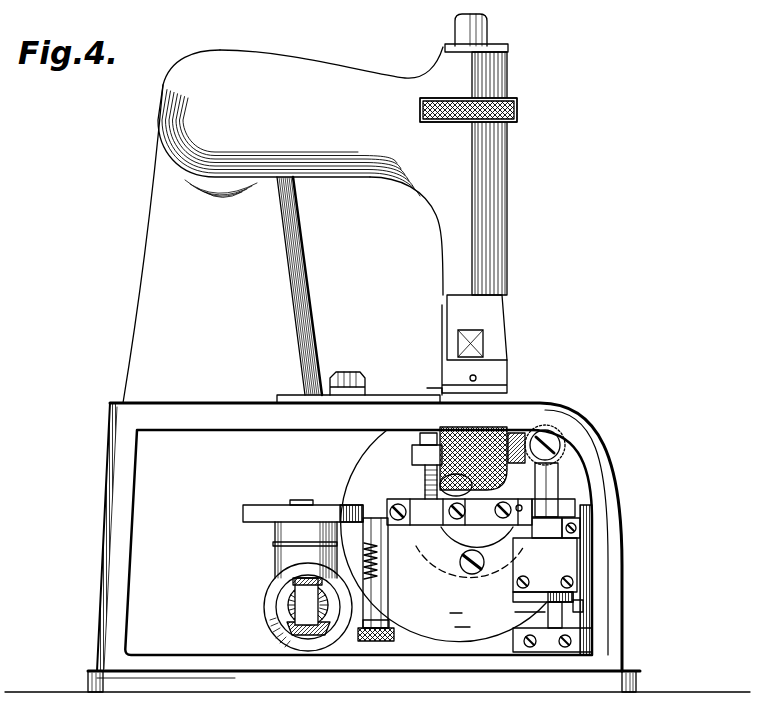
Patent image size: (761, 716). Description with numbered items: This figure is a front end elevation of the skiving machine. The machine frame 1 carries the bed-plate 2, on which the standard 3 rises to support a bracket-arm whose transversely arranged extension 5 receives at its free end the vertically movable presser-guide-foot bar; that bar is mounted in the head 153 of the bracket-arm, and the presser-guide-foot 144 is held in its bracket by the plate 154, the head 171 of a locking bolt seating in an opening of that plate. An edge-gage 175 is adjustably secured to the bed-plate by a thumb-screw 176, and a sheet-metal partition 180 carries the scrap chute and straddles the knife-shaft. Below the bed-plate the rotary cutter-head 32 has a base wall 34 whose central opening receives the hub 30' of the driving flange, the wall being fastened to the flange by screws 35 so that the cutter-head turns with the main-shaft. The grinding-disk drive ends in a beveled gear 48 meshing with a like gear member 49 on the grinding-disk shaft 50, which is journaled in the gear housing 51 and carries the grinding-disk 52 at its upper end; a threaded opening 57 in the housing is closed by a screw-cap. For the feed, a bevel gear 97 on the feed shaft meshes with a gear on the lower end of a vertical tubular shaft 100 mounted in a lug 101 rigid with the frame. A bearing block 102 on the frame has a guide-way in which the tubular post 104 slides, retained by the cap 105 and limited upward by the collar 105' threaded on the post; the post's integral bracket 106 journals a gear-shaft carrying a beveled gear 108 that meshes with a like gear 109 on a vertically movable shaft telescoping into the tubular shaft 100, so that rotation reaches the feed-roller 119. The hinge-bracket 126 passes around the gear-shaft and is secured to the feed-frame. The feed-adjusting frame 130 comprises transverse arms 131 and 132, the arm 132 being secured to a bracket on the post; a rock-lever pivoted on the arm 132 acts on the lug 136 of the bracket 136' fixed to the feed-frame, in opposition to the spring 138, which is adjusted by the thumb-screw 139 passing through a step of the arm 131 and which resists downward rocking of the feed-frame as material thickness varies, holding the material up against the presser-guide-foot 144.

The machine frame 1 is at (127, 500).
The bed-plate 2 is at (137, 413).
The standard 3 is at (222, 244).
The transversely arranged extension 5 is at (324, 71).
The hub 30' is at (470, 551).
The rotary cutter-head 32 is at (463, 621).
The base wall 34 is at (456, 613).
The screws 35 is at (472, 574).
The beveled gear 48 is at (302, 597).
The gear member 49 is at (293, 623).
The grinding-disk shaft 50 is at (290, 600).
The gear housing 51 is at (276, 613).
The grinding-disk 52 is at (257, 505).
The threaded opening 57 is at (280, 607).
The bevel gear 97 is at (550, 610).
The tubular shaft 100 is at (548, 609).
The lug 101 is at (593, 638).
The bearing block 102 is at (592, 565).
The tubular post 104 is at (541, 538).
The cap 105 is at (615, 537).
The collar 105' is at (625, 597).
The bracket 106 is at (560, 498).
The beveled gear 108 is at (562, 427).
The gear 109 is at (568, 455).
The feed-roller 119 is at (477, 419).
The hinge-bracket 126 is at (520, 434).
The feed-adjusting frame 130 is at (377, 508).
The arm 131 is at (391, 611).
The arm 132 is at (512, 508).
The lug 136 is at (421, 482).
The bracket 136' is at (386, 448).
The spring 138 is at (378, 563).
The thumb-screw 139 is at (382, 642).
The presser-guide-foot 144 is at (492, 372).
The head 153 is at (440, 176).
The plate 154 is at (483, 317).
The head 171 is at (482, 338).
The edge-gage 175 is at (377, 393).
The thumb-screw 176 is at (352, 360).
The sheet-metal partition 180 is at (190, 437).